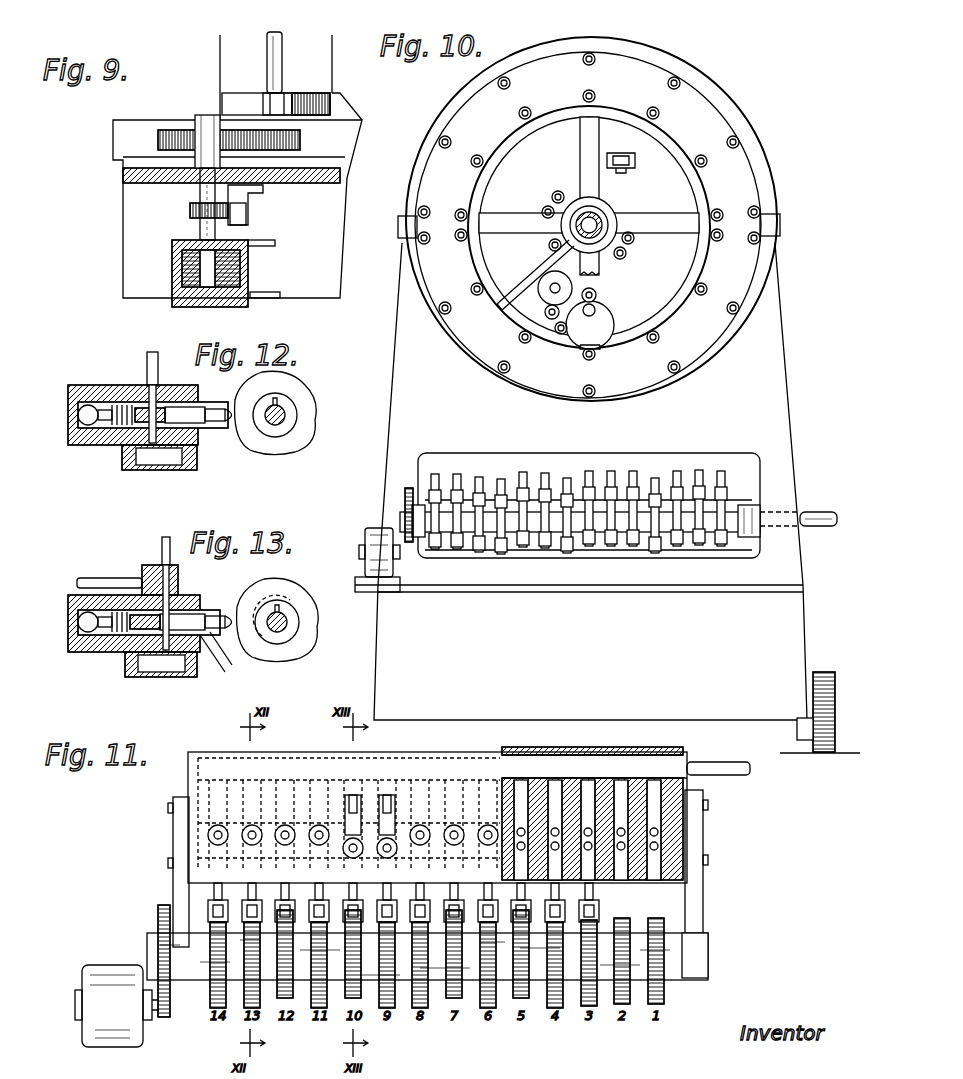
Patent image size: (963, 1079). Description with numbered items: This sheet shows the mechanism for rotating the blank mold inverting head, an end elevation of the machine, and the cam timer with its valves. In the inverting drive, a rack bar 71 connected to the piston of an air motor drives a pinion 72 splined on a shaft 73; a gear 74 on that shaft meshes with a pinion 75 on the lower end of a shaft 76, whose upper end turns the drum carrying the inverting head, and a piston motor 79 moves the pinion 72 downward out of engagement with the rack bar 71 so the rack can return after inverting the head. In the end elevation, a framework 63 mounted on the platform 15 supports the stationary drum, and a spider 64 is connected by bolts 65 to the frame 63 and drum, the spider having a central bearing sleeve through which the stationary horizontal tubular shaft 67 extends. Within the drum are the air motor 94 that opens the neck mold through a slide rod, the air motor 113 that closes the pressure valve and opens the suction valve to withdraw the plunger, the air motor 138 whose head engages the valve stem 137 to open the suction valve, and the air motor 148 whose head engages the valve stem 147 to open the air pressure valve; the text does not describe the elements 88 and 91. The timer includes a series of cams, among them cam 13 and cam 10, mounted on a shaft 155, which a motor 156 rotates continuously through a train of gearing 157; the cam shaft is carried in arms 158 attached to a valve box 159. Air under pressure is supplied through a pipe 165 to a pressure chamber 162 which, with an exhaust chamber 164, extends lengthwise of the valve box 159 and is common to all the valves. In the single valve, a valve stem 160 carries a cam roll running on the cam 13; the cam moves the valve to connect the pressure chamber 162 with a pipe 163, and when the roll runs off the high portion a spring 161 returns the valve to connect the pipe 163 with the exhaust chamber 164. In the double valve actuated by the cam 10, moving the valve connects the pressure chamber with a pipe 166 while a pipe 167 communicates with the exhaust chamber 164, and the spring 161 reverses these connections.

In FIG. 9, the shaft 76 is at (280, 66).
In FIG. 9, the gear 74 is at (200, 128).
In FIG. 9, the pinion 75 is at (300, 140).
In FIG. 9, the shaft 73 is at (200, 192).
In FIG. 9, the pinion 72 is at (190, 211).
In FIG. 9, the rack bar 71 is at (246, 211).
In FIG. 9, the piston motor 79 is at (175, 262).
In FIG. 10, the spider 64 is at (685, 105).
In FIG. 10, the bolts 65 is at (705, 292).
In FIG. 10, the stationary horizontal tubular shaft 67 is at (598, 222).
In FIG. 10, the clip 88 is at (618, 155).
In FIG. 10, the valve stem 137 is at (552, 195).
In FIG. 10, the valve stem 147 is at (542, 212).
In FIG. 10, the air motor 113 is at (549, 248).
In FIG. 10, the air motor 148 is at (634, 240).
In FIG. 10, the air motor 138 is at (622, 260).
In FIG. 10, the air motor 94 is at (546, 294).
In FIG. 10, the disc 91 is at (605, 322).
In FIG. 10, the framework 63 is at (765, 340).
In FIG. 10, the platform 15 is at (387, 650).
In FIG. 10, the arms 158 is at (748, 507).
In FIG. 11, the arms 158 is at (178, 888).
In FIG. 10, the valve box 159 is at (495, 545).
In FIG. 11, the valve box 159 is at (680, 817).
In FIG. 10, the train of gearing 157 is at (405, 490).
In FIG. 11, the train of gearing 157 is at (160, 925).
In FIG. 10, the motor 156 is at (367, 530).
In FIG. 11, the motor 156 is at (108, 975).
In FIG. 10, the pipe 165 is at (826, 510).
In FIG. 11, the pipe 165 is at (750, 772).
In FIG. 12, the spring 161 is at (132, 395).
In FIG. 13, the spring 161 is at (122, 650).
In FIG. 12, the exhaust chamber 164 is at (160, 470).
In FIG. 13, the exhaust chamber 164 is at (168, 677).
In FIG. 12, the air pressure chamber 162 is at (92, 430).
In FIG. 13, the air pressure chamber 162 is at (95, 637).
In FIG. 11, the air pressure chamber 162 is at (660, 760).
In FIG. 12, the valve stem 160 is at (225, 424).
In FIG. 12, the pipe 163 is at (154, 356).
In FIG. 12, the cam 13 is at (315, 417).
In FIG. 13, the pipe 167 is at (168, 537).
In FIG. 13, the pipe 166 is at (112, 578).
In FIG. 13, the cam 10 is at (277, 660).
In FIG. 13, the shaft 155 is at (287, 622).